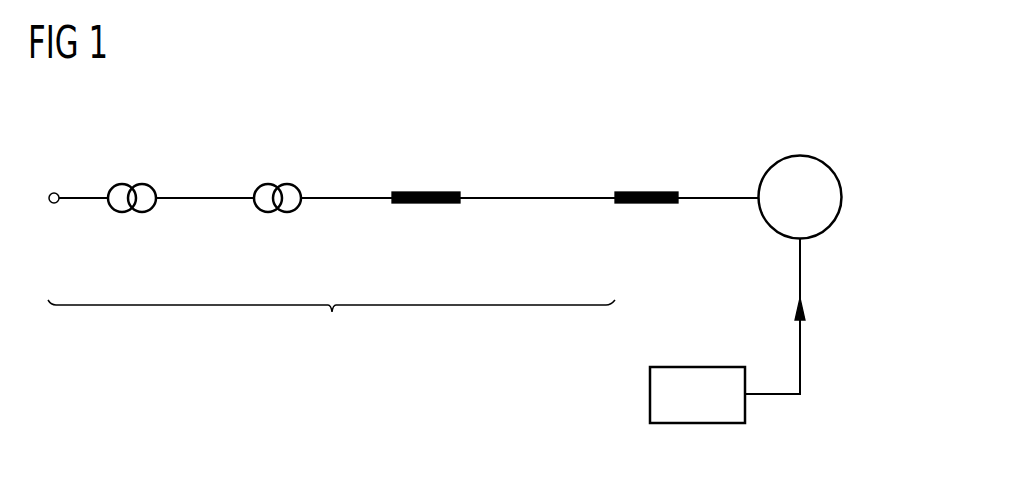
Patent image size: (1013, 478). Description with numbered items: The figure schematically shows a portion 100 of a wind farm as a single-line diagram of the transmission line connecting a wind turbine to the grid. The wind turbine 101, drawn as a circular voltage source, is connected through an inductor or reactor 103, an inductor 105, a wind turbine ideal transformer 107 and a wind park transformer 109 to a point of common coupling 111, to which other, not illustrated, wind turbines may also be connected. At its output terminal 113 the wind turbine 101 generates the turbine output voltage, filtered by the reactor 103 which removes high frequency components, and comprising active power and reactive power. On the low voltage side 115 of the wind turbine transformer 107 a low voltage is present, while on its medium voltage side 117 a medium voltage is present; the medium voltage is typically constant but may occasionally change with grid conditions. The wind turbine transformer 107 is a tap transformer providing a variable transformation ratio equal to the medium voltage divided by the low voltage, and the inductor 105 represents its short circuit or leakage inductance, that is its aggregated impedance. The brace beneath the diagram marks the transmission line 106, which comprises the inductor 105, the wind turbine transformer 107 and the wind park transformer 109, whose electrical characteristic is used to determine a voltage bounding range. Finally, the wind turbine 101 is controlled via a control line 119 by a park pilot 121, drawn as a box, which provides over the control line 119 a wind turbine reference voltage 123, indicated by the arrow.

The portion of a wind farm 100 is at (717, 83).
The wind turbine 101 is at (767, 225).
The inductor or reactor 103 is at (655, 204).
The inductor 105 is at (425, 204).
The transmission line 106 is at (331, 325).
The wind turbine transformer 107 is at (285, 212).
The wind park transformer 109 is at (138, 212).
The point of common coupling 111 is at (53, 193).
The output terminal 113 is at (614, 193).
The low voltage side 115 is at (302, 193).
The medium voltage side 117 is at (254, 195).
The control line 119 is at (800, 268).
The park pilot 121 is at (698, 365).
The wind turbine reference voltage 123 is at (807, 300).